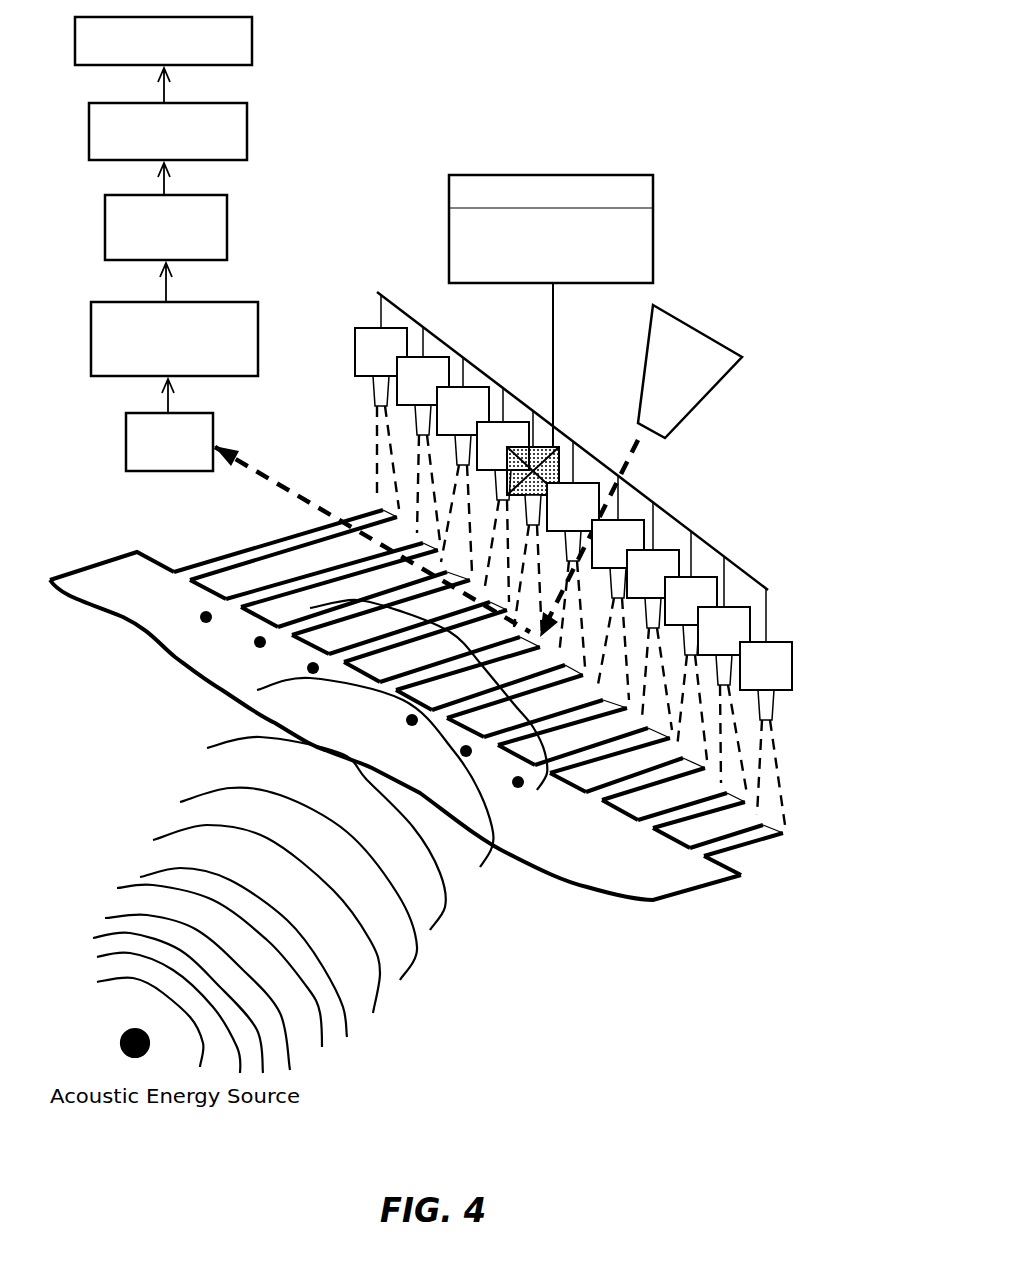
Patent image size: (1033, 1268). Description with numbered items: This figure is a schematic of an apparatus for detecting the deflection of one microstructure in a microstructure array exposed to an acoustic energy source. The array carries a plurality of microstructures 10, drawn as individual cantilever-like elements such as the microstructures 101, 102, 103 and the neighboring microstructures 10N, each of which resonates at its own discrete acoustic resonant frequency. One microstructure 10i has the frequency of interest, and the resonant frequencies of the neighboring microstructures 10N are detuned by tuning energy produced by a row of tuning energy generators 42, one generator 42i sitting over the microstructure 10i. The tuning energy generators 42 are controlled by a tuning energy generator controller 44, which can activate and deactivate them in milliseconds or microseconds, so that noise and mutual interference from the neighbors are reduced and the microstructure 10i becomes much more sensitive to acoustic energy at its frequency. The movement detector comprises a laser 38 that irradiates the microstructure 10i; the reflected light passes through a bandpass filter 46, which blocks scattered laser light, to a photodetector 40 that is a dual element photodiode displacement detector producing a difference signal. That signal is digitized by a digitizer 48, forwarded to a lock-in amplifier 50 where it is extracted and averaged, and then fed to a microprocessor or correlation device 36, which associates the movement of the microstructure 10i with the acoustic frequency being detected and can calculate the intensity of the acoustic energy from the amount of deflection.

The microprocessor or correlation device 36 is at (252, 41).
The lock-in amplifier 50 is at (247, 127).
The digitizer 48 is at (227, 228).
The photodetector 40 is at (258, 331).
The bandpass filter 46 is at (213, 422).
The tuning energy generator controller 44 is at (552, 175).
The laser 38 is at (697, 328).
The tuning energy generators 42 is at (616, 558).
The tuning energy generator 42i is at (548, 447).
The microstructure 10 is at (453, 665).
The neighboring microstructures 10N is at (352, 531).
The microstructure having the frequency of interest 10i is at (510, 630).
The microstructure 103 is at (692, 762).
The microstructure 102 is at (745, 798).
The microstructure 101 is at (768, 830).